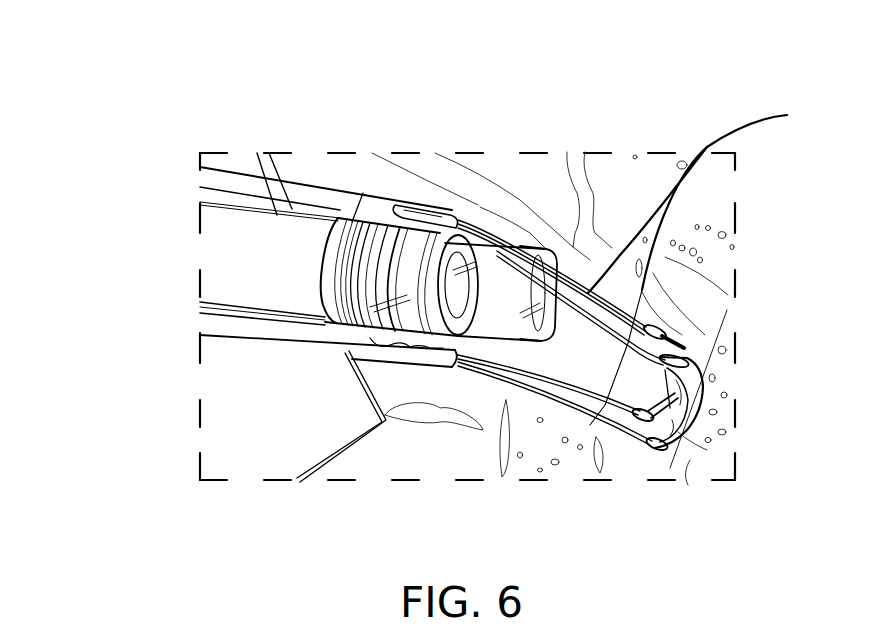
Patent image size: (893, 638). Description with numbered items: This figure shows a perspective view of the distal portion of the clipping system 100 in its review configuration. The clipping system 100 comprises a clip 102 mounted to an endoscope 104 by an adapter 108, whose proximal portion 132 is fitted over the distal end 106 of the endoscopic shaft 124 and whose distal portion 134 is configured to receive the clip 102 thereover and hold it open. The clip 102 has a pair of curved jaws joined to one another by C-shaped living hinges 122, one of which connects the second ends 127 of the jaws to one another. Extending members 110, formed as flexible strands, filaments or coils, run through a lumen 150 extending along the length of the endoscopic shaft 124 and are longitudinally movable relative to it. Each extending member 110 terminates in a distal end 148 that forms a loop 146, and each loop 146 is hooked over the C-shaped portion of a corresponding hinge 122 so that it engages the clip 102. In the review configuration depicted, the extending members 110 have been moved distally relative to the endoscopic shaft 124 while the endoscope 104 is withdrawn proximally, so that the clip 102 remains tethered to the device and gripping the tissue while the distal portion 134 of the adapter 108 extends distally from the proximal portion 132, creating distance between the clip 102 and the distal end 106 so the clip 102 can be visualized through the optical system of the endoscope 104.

The clipping system 100 is at (449, 109).
The clip 102 is at (707, 450).
The endoscope 104 is at (277, 228).
The distal end 106 is at (195, 508).
The adapter 108 is at (492, 216).
The extending members 110 is at (598, 286).
The hinges 122 is at (700, 343).
The endoscopic shaft 124 is at (226, 228).
The second end 127 is at (548, 250).
The proximal portion 132 is at (444, 253).
The distal portion 134 is at (503, 322).
The loop 146 is at (672, 468).
The distal end 148 is at (650, 418).
The lumen 150 is at (268, 338).